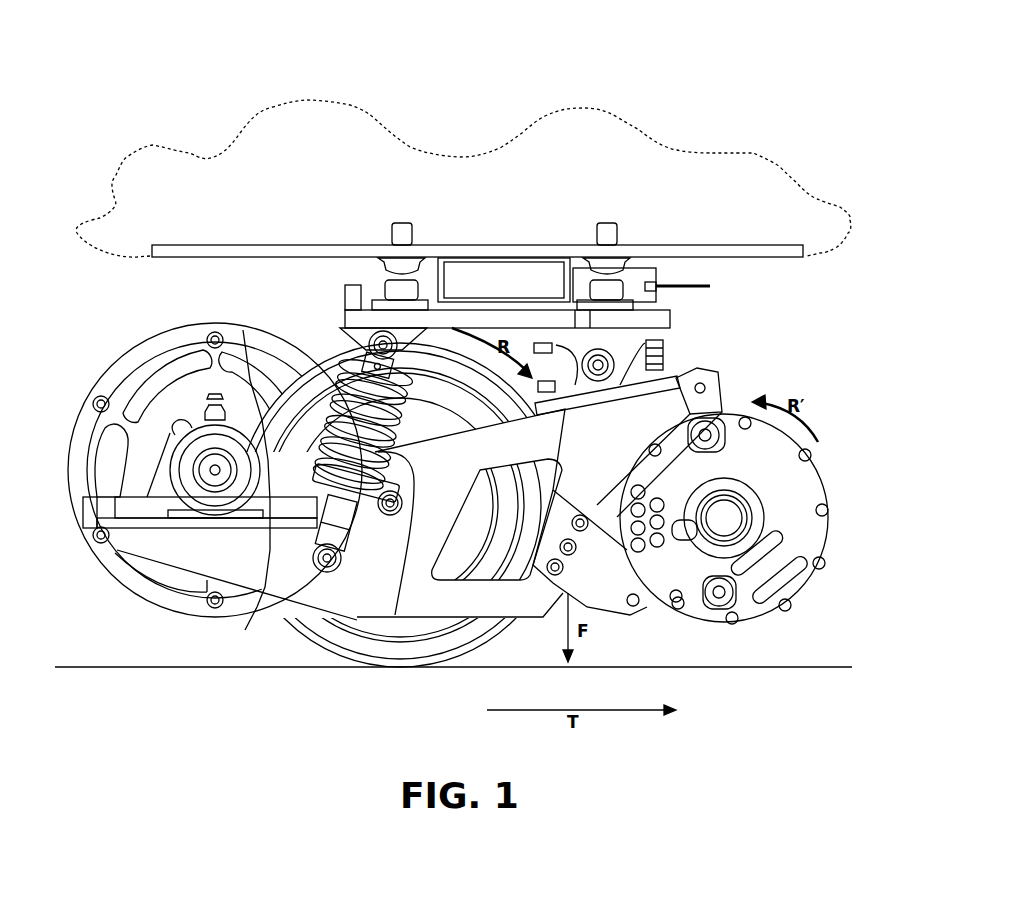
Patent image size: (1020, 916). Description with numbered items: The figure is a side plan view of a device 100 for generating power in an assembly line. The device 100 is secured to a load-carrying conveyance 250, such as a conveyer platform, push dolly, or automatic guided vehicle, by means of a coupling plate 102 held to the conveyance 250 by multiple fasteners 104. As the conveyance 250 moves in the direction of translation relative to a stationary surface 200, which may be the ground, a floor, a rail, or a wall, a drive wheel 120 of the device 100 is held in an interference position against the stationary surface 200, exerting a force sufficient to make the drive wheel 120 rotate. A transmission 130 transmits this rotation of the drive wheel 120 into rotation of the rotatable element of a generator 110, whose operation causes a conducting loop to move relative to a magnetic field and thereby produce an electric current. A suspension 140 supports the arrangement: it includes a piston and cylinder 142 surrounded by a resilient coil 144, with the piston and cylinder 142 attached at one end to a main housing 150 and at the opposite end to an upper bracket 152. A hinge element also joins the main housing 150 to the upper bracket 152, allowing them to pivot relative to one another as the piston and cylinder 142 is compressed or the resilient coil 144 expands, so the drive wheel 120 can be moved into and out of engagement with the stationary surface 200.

The device 100 is at (764, 364).
The coupling plate 102 is at (232, 245).
The fasteners 104 is at (400, 222).
The generator 110 is at (826, 568).
The drive wheel 120 is at (301, 648).
The transmission 130 is at (88, 390).
The suspension 140 is at (328, 394).
The piston and cylinder 142 is at (396, 617).
The resilient coil 144 is at (272, 601).
The main housing 150 is at (262, 608).
The upper bracket 152 is at (345, 316).
The stationary surface 200 is at (78, 665).
The load-carrying conveyance 250 is at (727, 146).